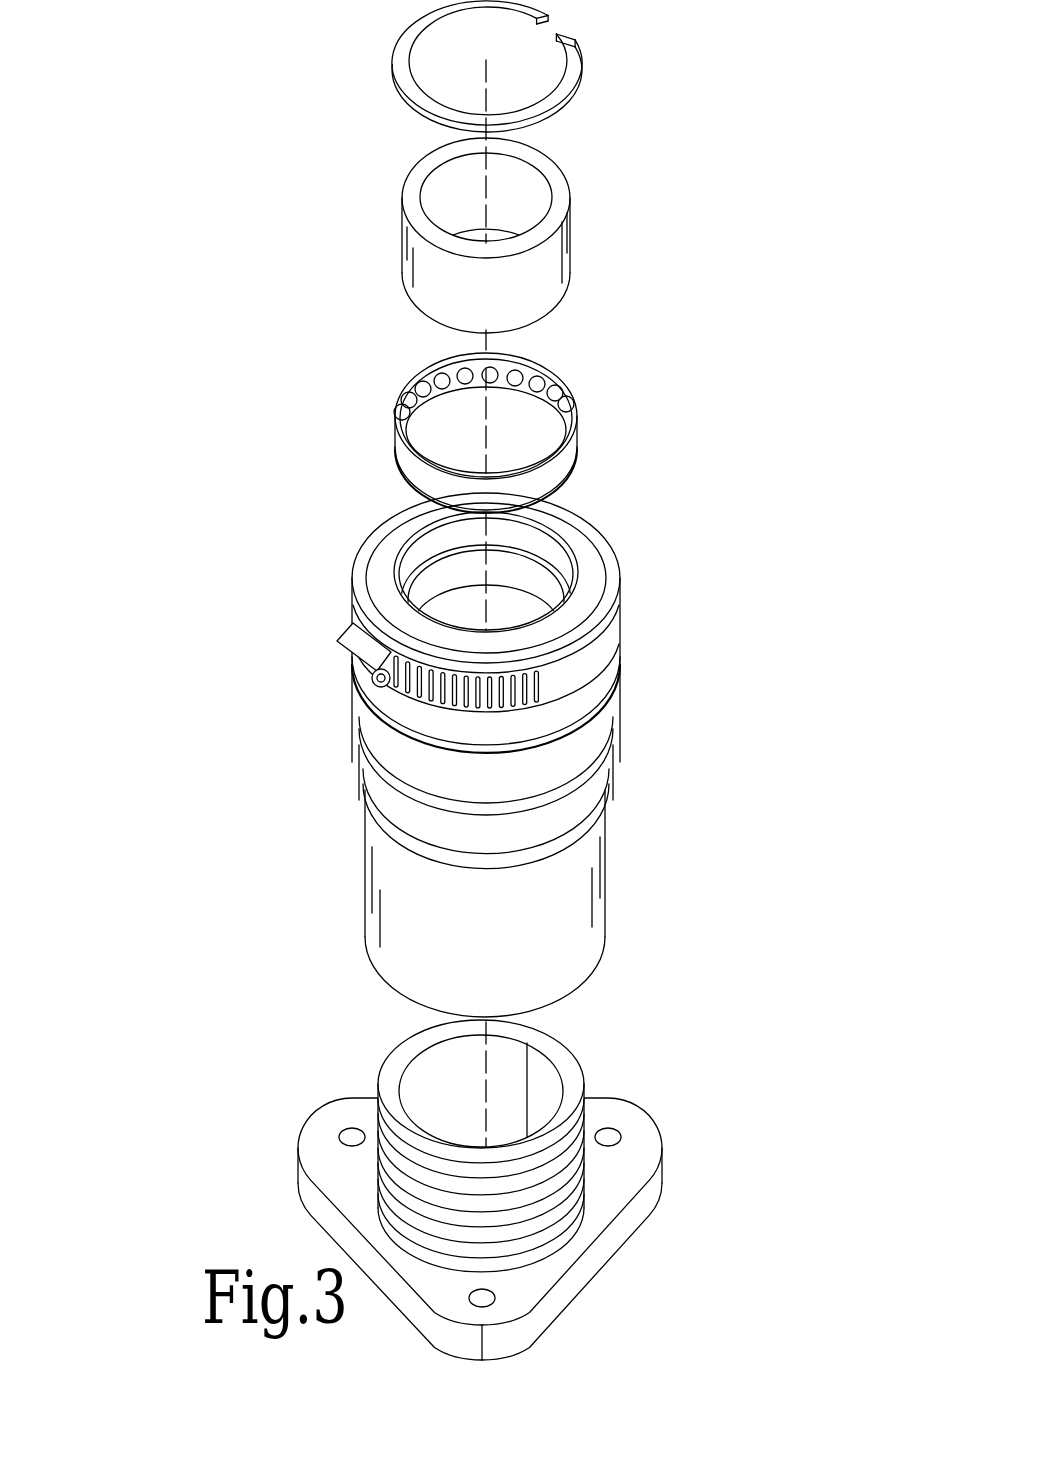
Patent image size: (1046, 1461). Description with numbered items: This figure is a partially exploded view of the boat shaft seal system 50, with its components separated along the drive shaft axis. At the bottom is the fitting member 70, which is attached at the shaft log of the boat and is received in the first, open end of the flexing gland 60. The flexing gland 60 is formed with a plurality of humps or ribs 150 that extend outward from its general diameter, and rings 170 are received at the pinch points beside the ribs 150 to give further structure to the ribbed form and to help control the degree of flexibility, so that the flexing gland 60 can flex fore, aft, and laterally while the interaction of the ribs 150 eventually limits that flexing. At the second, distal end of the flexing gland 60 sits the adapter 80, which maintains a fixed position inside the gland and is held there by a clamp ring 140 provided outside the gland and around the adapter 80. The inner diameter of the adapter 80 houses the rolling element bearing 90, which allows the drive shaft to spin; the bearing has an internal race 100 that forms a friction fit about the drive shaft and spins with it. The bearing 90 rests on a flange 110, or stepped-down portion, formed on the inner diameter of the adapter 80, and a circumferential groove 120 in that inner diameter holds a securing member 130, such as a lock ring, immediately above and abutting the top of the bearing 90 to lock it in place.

The boat shaft seal system 50 is at (160, 116).
The flexing gland 60 is at (563, 868).
The fitting member 70 is at (643, 1130).
The adapter 80 is at (464, 546).
The rolling element bearing 90 is at (575, 432).
The internal race 100 is at (543, 270).
The flange 110 is at (557, 578).
The circumferential groove 120 is at (420, 507).
The securing member 130 is at (576, 62).
The clamp ring 140 is at (358, 648).
The ribs 150 is at (456, 681).
The rings 170 is at (390, 827).